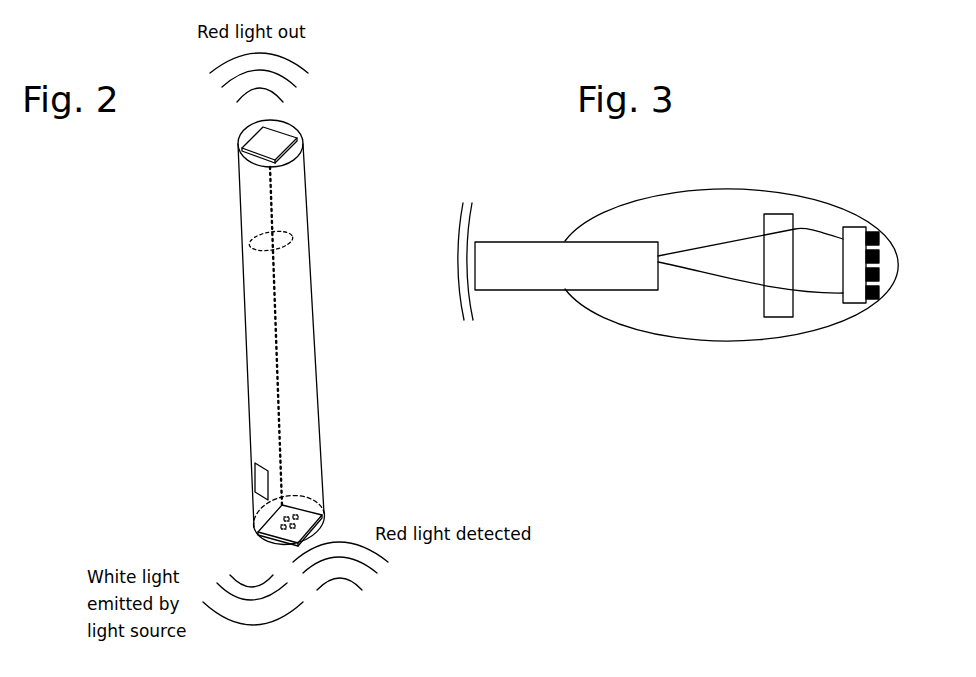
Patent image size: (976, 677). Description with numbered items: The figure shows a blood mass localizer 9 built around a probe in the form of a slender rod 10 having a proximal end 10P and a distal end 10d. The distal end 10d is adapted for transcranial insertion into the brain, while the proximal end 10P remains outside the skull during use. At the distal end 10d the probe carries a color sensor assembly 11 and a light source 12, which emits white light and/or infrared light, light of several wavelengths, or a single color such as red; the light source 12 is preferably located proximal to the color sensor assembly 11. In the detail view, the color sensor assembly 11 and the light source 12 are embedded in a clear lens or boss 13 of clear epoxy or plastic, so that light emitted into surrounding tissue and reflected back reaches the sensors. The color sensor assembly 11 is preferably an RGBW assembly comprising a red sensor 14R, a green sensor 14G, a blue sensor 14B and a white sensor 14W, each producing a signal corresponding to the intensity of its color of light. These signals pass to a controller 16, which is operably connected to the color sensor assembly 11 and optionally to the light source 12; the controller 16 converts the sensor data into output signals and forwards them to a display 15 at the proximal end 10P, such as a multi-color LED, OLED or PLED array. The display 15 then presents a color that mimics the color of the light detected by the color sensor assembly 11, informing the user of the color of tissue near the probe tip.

In FIG. 2, the blood mass localizer 9 is at (188, 298).
In FIG. 2, the slender rod 10 is at (313, 298).
In FIG. 2, the proximal end 10P is at (238, 183).
In FIG. 2, the distal end 10d is at (252, 508).
In FIG. 3, the distal end 10d is at (530, 242).
In FIG. 2, the color sensor assembly 11 is at (300, 509).
In FIG. 3, the color sensor assembly 11 is at (850, 227).
In FIG. 2, the light source 12 is at (253, 490).
In FIG. 3, the light source 12 is at (783, 214).
In FIG. 3, the clear lens or boss 13 is at (747, 195).
In FIG. 3, the red light sensor 14R is at (877, 233).
In FIG. 3, the green light sensor 14G is at (880, 255).
In FIG. 3, the blue light sensor 14B is at (880, 272).
In FIG. 3, the white light sensor 14W is at (872, 303).
In FIG. 2, the display 15 is at (283, 128).
In FIG. 2, the controller 16 is at (258, 238).